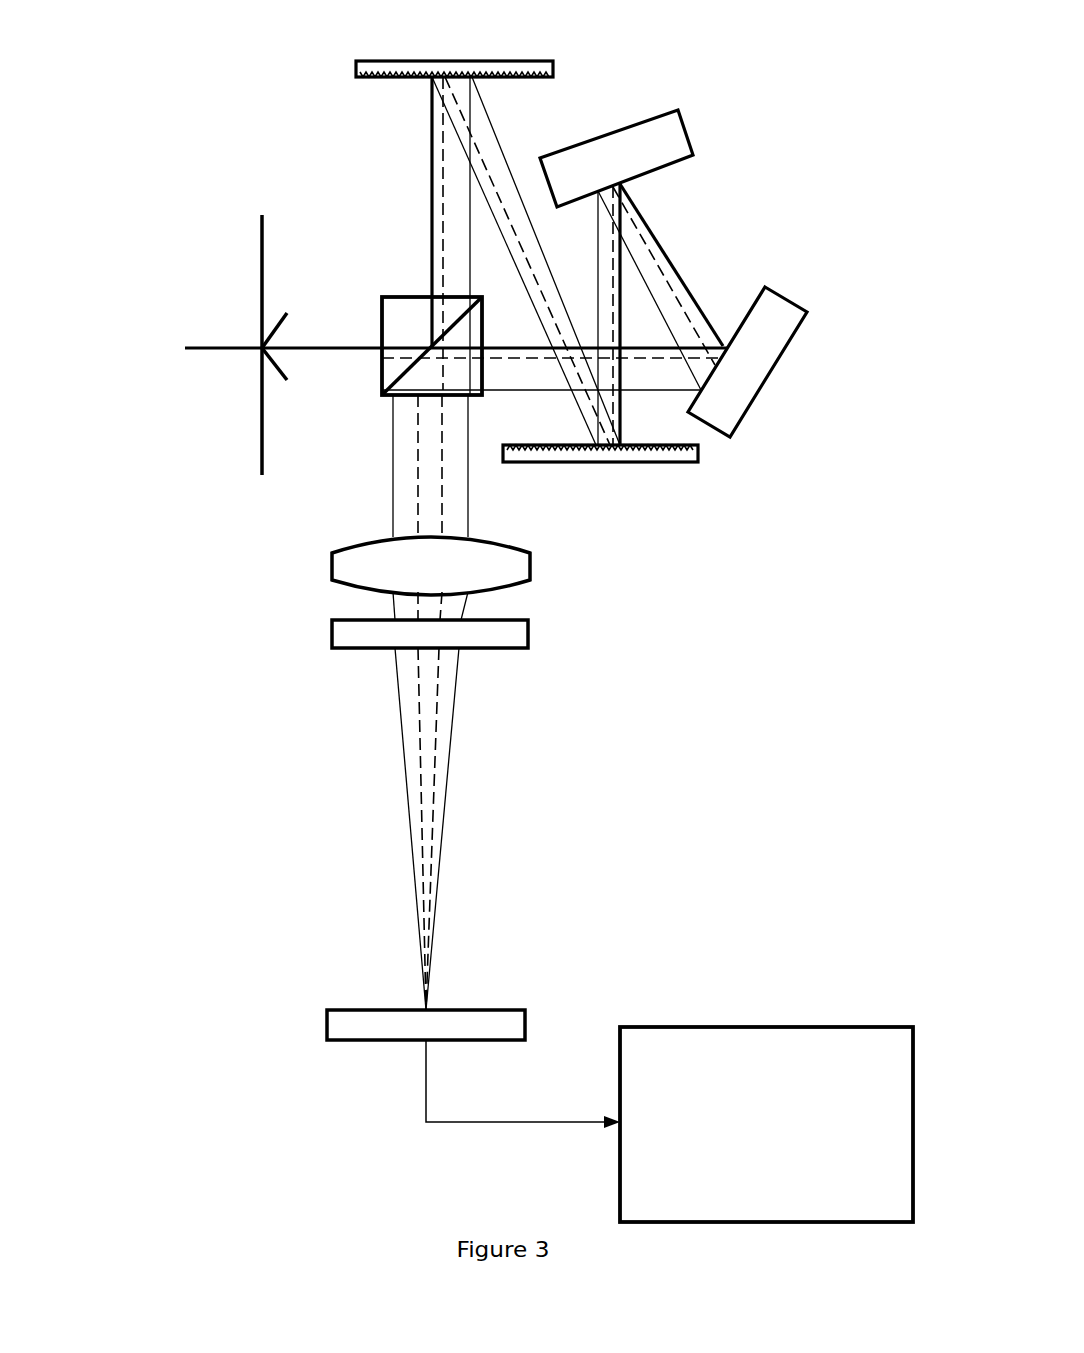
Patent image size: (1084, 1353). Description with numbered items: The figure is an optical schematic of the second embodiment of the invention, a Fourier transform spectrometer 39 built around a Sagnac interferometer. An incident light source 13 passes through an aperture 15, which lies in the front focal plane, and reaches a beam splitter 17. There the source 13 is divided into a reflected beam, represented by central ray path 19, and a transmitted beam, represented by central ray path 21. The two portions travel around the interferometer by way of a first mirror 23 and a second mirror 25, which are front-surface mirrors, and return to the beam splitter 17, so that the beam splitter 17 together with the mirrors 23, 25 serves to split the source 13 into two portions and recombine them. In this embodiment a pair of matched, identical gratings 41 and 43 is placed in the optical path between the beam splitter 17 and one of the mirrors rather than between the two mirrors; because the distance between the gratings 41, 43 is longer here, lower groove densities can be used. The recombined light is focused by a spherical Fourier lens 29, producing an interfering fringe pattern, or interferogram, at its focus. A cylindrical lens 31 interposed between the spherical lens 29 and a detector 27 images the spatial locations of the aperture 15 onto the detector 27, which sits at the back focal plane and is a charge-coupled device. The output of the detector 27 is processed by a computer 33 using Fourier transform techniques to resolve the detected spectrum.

The incident light source 13 is at (215, 343).
The aperture 15 is at (262, 255).
The beam splitter 17 is at (380, 378).
The central ray path of reflected beam 19 is at (432, 236).
The central ray path of transmitted beam 21 is at (484, 362).
The first mirror 23 is at (612, 133).
The second mirror 25 is at (770, 377).
The detector 27 is at (327, 1020).
The spherical (Fourier) lens 29 is at (332, 569).
The cylindrical lens 31 is at (332, 633).
The computer 33 is at (767, 1027).
The spectrometer 39 is at (603, 553).
The first matched grating 41 is at (400, 61).
The second matched grating 43 is at (623, 462).